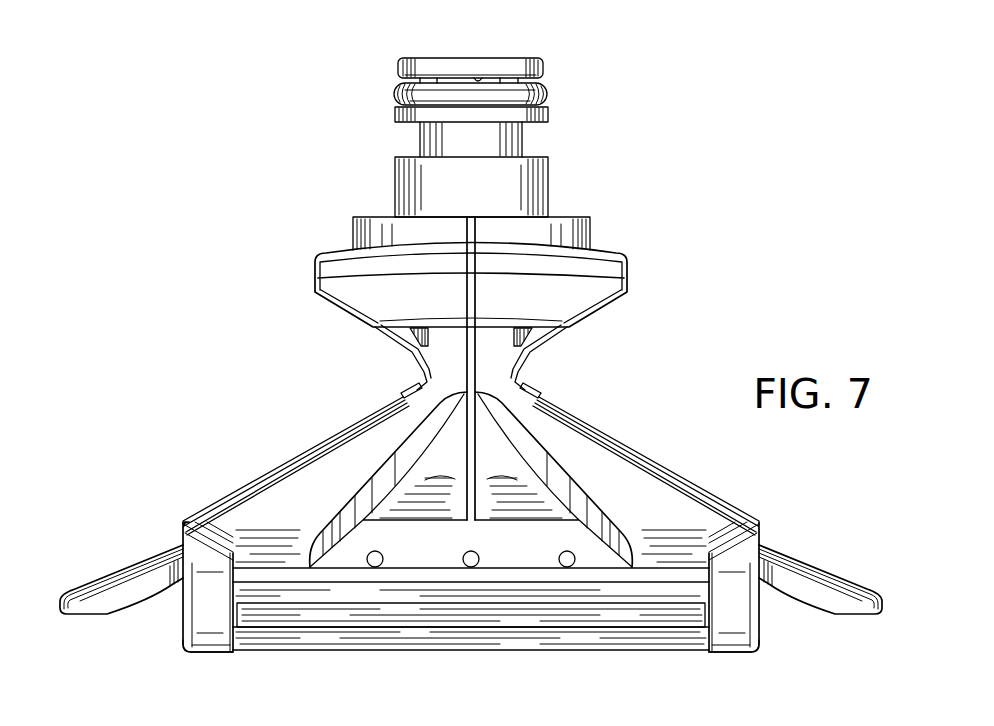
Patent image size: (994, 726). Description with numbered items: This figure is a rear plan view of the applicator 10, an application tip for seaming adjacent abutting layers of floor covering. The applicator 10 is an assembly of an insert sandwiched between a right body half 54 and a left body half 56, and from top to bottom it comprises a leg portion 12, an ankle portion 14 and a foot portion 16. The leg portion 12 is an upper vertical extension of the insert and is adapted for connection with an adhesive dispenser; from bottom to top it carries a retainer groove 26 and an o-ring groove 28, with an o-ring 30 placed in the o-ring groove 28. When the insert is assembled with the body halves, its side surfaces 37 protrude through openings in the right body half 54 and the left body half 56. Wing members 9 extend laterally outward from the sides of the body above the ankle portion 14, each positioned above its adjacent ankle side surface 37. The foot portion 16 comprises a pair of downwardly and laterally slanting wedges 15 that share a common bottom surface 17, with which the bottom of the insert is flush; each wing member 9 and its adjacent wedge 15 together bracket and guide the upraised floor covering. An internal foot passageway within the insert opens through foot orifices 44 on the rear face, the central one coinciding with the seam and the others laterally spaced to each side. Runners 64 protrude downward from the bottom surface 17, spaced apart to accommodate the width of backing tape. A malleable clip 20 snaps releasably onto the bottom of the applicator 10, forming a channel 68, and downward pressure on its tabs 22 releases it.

The applicator 10 is at (713, 213).
The o-ring groove 28 is at (480, 77).
The o-ring 30 is at (548, 95).
The retainer groove 26 is at (530, 139).
The leg portion 12 is at (573, 205).
The wing member 9 is at (627, 275).
The ankle portion 14 is at (548, 370).
The side surfaces 37 is at (413, 384).
The wedges 15 is at (285, 463).
The right body half 54 is at (698, 489).
The left body half 56 is at (218, 504).
The foot portion 16 is at (760, 534).
The runners 64 is at (212, 651).
The tabs 22 is at (87, 602).
The clip 20 is at (622, 644).
The bottom surface 17 is at (362, 583).
The channel 68 is at (485, 591).
The foot orifices 44 is at (383, 560).